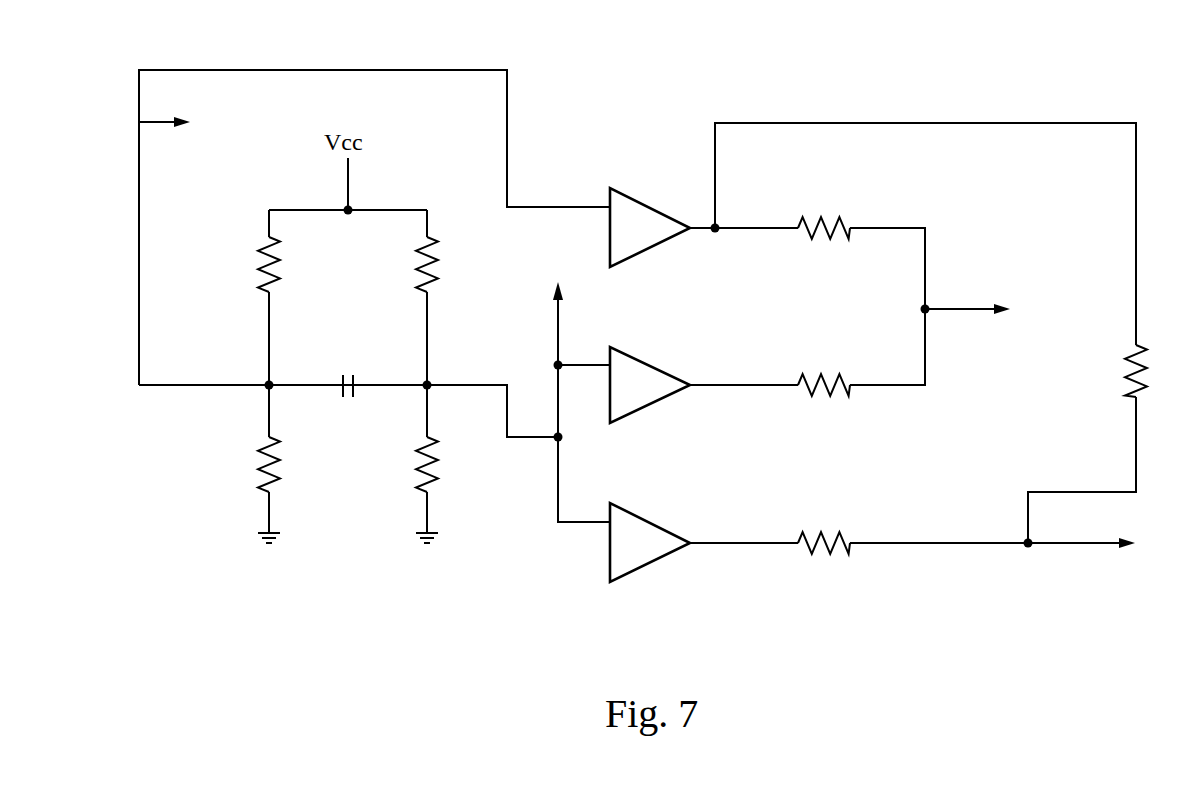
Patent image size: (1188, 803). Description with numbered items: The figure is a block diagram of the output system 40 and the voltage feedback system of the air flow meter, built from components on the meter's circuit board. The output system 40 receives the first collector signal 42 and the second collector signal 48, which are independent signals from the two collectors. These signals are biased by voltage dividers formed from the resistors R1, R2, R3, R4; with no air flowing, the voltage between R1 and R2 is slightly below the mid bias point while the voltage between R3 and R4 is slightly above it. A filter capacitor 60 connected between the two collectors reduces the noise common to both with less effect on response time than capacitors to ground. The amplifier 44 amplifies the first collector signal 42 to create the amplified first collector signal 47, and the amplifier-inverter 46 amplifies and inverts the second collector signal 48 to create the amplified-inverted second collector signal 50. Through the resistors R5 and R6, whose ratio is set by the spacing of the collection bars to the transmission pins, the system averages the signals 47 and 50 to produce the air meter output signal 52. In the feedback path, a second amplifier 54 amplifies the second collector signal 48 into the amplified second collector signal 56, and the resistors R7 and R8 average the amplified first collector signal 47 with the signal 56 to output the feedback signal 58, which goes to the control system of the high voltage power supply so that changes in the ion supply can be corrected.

The output system 40 is at (913, 123).
The first collector signal 42 is at (156, 122).
The amplifier 44 is at (650, 250).
The amplifier-inverter 46 is at (648, 364).
The amplified first collector signal 47 is at (715, 228).
The second collector signal 48 is at (560, 320).
The amplified-inverted second collector signal 50 is at (735, 388).
The air meter output signal 52 is at (960, 309).
The second amplifier 54 is at (648, 522).
The amplified second collector signal 56 is at (735, 546).
The feedback signal 58 is at (1083, 546).
The filter capacitor 60 is at (340, 383).
The resistor R1 is at (262, 281).
The resistor R2 is at (262, 481).
The resistor R3 is at (420, 281).
The resistor R4 is at (420, 481).
The resistor R5 is at (832, 220).
The resistor R6 is at (832, 378).
The resistor R7 is at (1127, 384).
The resistor R8 is at (832, 535).